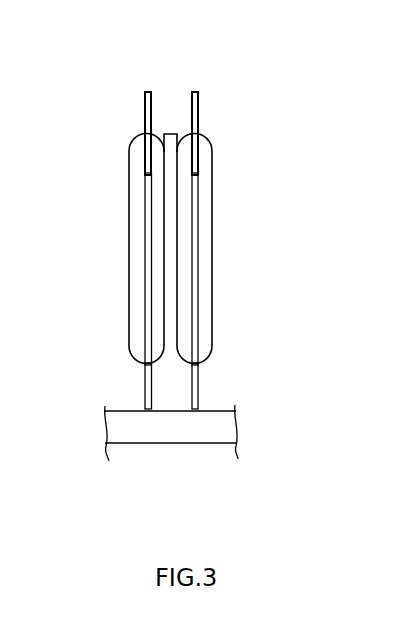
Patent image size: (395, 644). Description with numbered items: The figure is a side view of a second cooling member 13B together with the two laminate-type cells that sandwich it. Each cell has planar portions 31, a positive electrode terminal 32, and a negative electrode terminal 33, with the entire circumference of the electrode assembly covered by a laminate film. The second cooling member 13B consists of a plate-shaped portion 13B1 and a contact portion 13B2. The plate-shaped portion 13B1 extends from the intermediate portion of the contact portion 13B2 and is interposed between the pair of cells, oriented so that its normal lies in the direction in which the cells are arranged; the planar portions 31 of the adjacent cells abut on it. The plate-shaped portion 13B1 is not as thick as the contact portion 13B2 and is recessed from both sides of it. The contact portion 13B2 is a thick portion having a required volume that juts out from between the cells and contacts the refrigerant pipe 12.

The second cooling member 13B is at (173, 127).
The plate-shaped portion 13B1 is at (177, 165).
The contact portion 13B2 is at (186, 386).
The planar portion 31 is at (129, 238).
The positive electrode terminal 32 is at (145, 278).
The negative electrode terminal 33 is at (195, 208).
The refrigerant pipe 12 is at (134, 411).